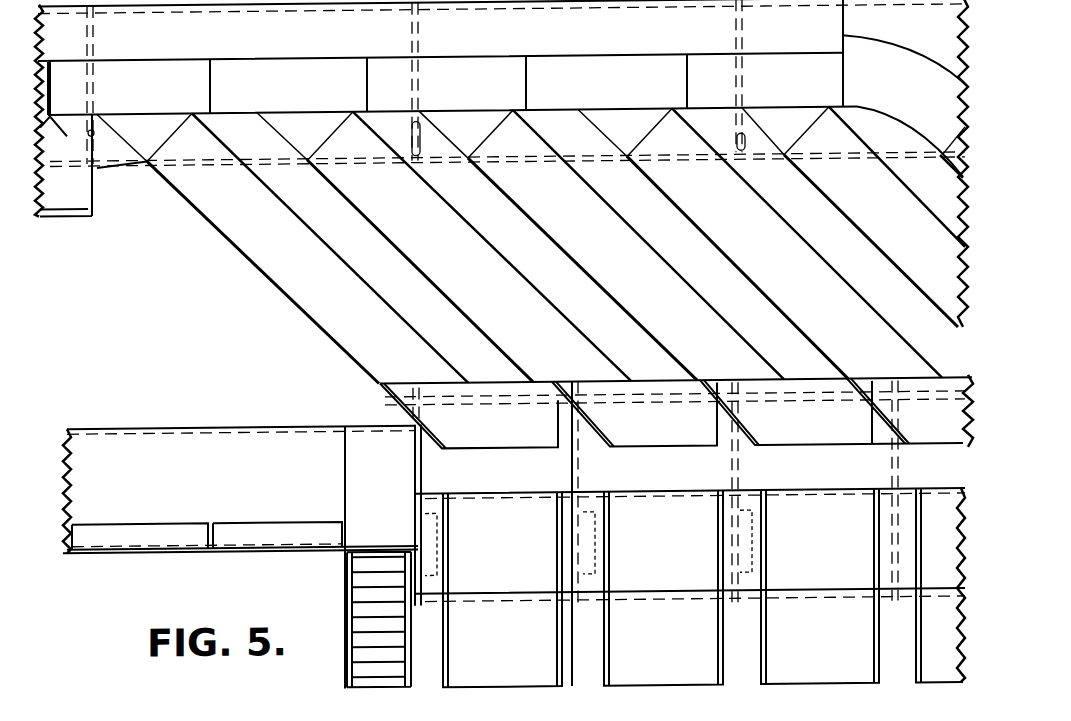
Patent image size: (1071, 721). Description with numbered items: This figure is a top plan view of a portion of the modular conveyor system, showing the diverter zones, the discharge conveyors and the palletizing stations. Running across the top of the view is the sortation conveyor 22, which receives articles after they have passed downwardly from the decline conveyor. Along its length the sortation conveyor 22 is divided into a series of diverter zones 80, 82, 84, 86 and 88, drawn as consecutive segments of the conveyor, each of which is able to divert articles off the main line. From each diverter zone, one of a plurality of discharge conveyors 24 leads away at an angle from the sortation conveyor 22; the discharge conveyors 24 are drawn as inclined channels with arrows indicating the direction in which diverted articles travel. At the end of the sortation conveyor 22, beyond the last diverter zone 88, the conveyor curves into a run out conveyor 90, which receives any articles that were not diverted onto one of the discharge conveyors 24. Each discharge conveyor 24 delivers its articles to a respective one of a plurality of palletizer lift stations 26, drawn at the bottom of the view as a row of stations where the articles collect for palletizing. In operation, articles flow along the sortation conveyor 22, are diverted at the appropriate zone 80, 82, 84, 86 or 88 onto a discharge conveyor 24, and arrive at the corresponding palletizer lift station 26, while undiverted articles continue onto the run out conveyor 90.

The sortation conveyor 22 is at (247, 44).
The discharge conveyors 24 is at (305, 271).
The palletizer lift stations 26 is at (507, 606).
The diverter zone 80 is at (158, 88).
The diverter zone 82 is at (318, 86).
The diverter zone 84 is at (484, 81).
The diverter zone 86 is at (643, 80).
The diverter zone 88 is at (795, 80).
The run out conveyor 90 is at (908, 70).